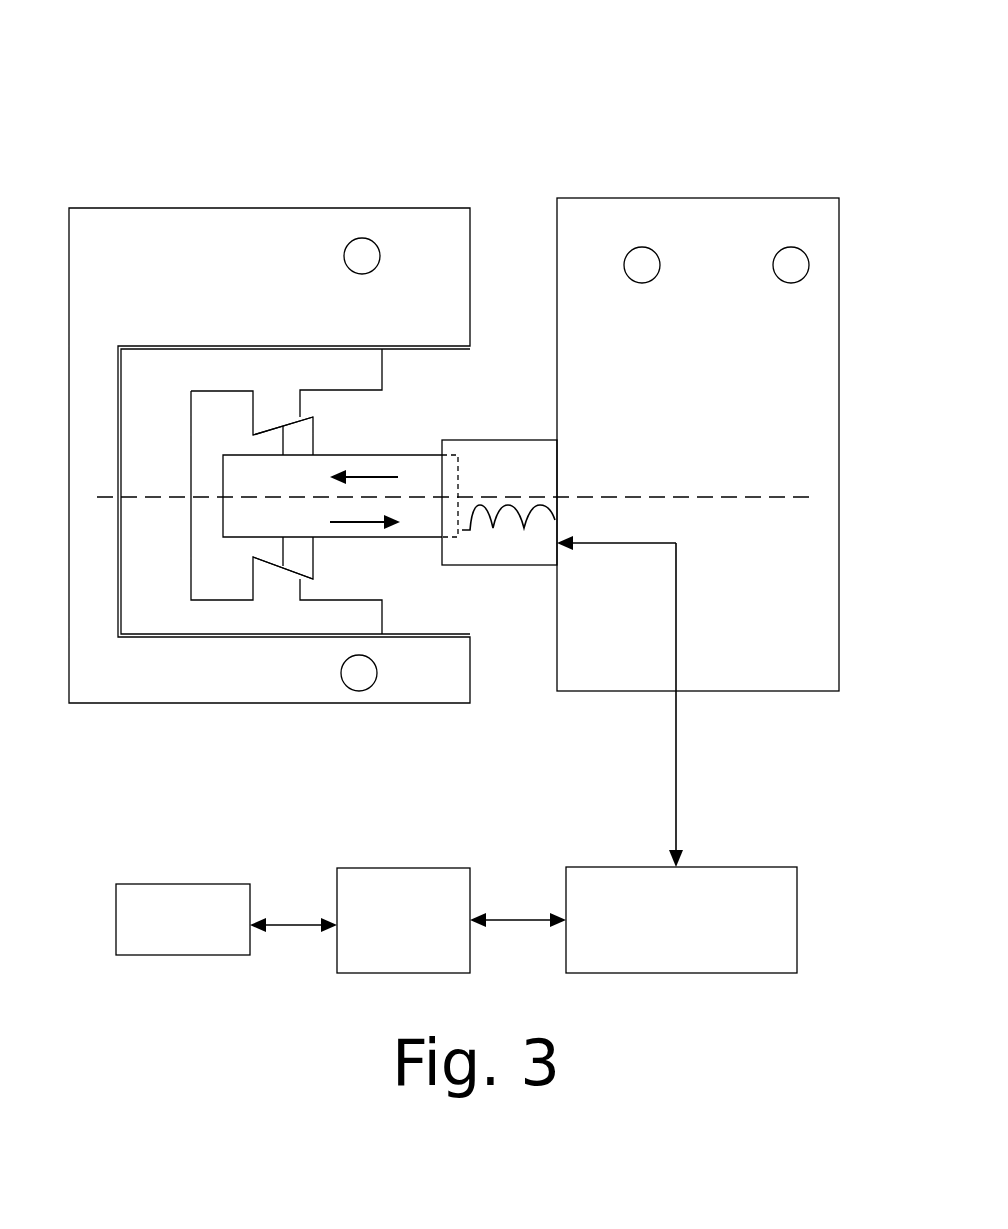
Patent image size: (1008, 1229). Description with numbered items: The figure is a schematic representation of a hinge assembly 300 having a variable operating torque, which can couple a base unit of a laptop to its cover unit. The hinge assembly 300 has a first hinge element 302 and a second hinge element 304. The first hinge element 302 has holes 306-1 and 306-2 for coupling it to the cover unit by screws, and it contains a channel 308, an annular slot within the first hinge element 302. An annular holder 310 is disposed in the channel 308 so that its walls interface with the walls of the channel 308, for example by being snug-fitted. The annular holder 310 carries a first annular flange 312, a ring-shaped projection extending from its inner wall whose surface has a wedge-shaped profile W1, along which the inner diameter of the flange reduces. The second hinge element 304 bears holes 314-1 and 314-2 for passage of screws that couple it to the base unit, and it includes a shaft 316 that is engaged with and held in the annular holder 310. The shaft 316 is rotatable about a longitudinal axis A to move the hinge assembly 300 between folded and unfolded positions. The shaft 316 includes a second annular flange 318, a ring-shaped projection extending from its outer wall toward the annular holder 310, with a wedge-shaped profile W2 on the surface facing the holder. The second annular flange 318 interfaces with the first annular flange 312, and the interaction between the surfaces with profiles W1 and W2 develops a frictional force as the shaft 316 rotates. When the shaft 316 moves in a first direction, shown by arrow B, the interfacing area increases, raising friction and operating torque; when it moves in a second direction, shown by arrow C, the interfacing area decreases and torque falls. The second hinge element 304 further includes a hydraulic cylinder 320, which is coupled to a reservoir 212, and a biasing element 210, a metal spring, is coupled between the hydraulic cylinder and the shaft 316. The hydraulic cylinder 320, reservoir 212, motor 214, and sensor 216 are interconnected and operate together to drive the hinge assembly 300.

The hinge assembly 300 is at (466, 82).
The first hinge element 302 is at (135, 233).
The second hinge element 304 is at (800, 655).
The hole 306-1 is at (360, 255).
The hole 306-2 is at (357, 672).
The channel 308 is at (420, 365).
The annular holder 310 is at (223, 617).
The first annular flange 312 is at (273, 410).
The hole 314-1 is at (640, 268).
The hole 314-2 is at (797, 268).
The shaft 316 is at (243, 477).
The second annular flange 318 is at (307, 437).
The hydraulic cylinder 320 is at (522, 440).
The biasing element 210 is at (481, 520).
The reservoir 212 is at (681, 920).
The motor 214 is at (403, 920).
The sensor 216 is at (183, 919).
The wedge-shaped profile W1 is at (272, 428).
The wedge-shaped profile W2 is at (308, 417).
The longitudinal axis A is at (752, 497).
The first direction B is at (365, 468).
The second direction C is at (370, 527).